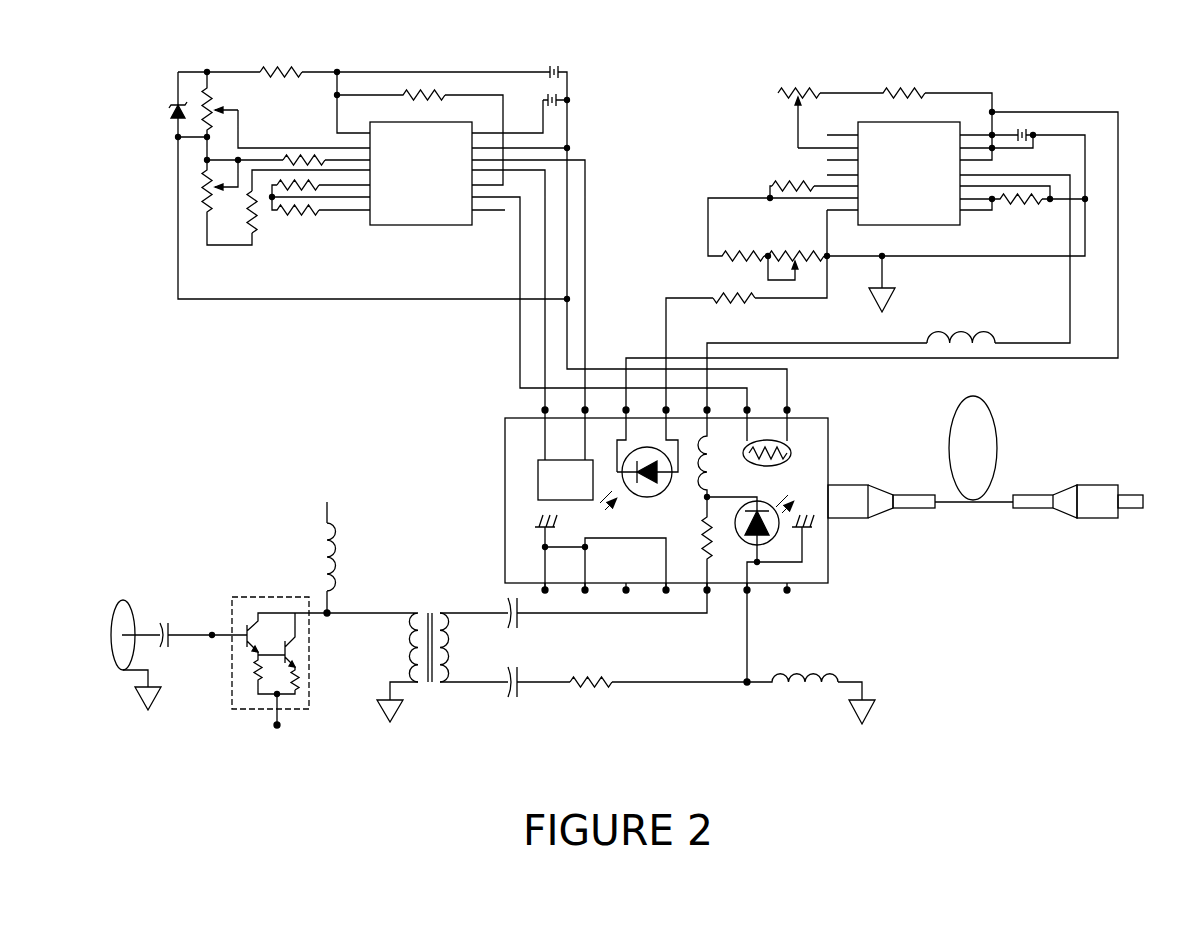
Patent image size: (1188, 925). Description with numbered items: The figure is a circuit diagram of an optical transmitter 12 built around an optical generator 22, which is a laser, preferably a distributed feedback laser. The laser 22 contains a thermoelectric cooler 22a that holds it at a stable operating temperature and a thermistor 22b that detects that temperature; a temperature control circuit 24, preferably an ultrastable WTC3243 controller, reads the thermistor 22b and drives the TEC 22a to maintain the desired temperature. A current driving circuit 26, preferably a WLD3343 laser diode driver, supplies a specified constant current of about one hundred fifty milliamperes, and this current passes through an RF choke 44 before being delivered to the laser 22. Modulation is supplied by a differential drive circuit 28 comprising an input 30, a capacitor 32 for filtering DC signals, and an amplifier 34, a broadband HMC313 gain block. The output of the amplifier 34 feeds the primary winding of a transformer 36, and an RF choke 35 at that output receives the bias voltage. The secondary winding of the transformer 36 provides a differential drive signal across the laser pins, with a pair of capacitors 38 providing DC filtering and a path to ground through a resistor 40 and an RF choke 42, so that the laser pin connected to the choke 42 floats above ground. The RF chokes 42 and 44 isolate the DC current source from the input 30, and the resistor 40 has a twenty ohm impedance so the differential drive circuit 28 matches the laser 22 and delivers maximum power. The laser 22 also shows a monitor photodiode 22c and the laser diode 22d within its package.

The optical transmitter 12 is at (987, 60).
The optical generator 22 is at (830, 420).
The thermoelectric cooler 22a is at (538, 480).
The thermistor 22b is at (800, 455).
The monitor photodiode 22c is at (647, 497).
The laser diode 22d is at (780, 534).
The temperature control circuit 24 is at (585, 52).
The current driving circuit 26 is at (742, 122).
The differential drive circuit 28 is at (425, 740).
The input 30 is at (108, 655).
The capacitor 32 is at (152, 592).
The amplifier 34 is at (242, 713).
The RF choke 35 is at (342, 552).
The transformer 36 is at (433, 585).
The pair of capacitors 38 is at (530, 630).
The resistor 40 is at (590, 700).
The RF choke 42 is at (813, 693).
The RF choke 44 is at (983, 307).